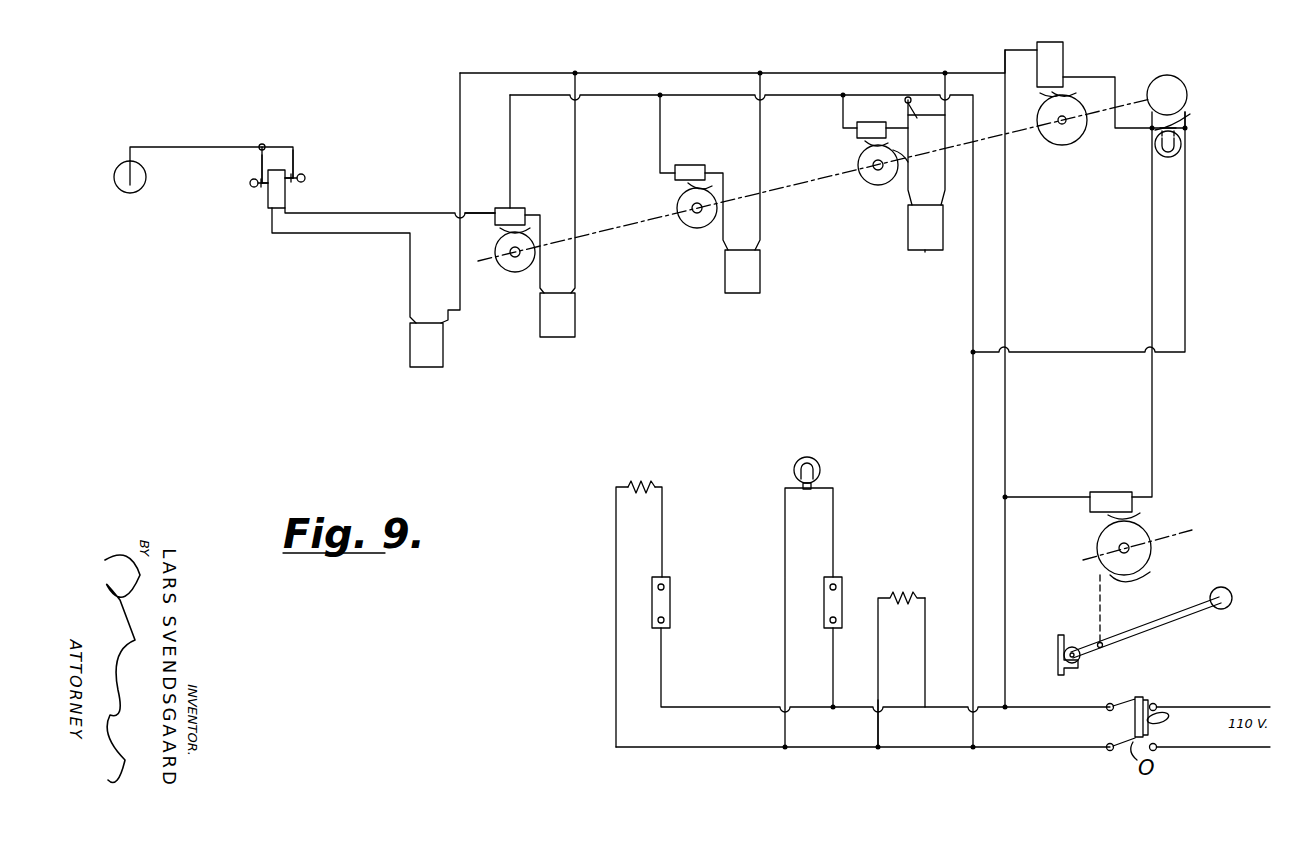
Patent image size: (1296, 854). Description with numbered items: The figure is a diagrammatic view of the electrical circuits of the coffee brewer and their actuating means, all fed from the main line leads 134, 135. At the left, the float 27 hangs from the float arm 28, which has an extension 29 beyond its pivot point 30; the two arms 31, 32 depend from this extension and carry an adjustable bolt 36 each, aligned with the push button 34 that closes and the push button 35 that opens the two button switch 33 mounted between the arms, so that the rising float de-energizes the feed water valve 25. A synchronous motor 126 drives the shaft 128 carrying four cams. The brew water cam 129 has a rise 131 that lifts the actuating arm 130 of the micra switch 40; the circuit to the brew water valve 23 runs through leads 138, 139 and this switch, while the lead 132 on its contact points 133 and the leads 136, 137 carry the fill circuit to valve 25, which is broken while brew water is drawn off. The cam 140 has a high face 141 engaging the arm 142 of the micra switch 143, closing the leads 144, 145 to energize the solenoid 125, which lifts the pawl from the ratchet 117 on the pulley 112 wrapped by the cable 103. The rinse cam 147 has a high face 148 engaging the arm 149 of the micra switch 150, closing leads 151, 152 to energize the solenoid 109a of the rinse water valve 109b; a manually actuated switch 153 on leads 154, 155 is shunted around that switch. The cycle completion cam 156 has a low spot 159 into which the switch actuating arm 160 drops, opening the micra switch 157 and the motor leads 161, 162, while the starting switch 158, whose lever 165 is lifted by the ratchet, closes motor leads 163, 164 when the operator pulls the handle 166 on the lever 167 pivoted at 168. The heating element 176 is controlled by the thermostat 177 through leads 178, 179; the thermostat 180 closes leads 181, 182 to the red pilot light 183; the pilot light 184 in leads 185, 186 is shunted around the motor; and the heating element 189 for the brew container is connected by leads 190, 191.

The solenoid controlled valve 23 is at (575, 318).
The solenoid-controlled valve 25 is at (418, 352).
The float 27 is at (131, 197).
The float arm 28 is at (187, 147).
The extension 29 is at (287, 147).
The pivot point 30 is at (264, 144).
The arm 31 is at (297, 155).
The arm 32 is at (260, 162).
The two button switch 33 is at (275, 197).
The push button 34 is at (263, 187).
The push button 35 is at (297, 185).
The adjustable bolt 36 is at (250, 181).
The micra switch 40 is at (515, 215).
The cable 103 is at (1102, 603).
The solenoid 109a is at (923, 230).
The rinse water valve 109b is at (927, 252).
The grooved pulley 112 is at (1133, 572).
The ratchet 117 is at (1157, 550).
The solenoid 125 is at (733, 278).
The synchronous motor 126 is at (1180, 83).
The shaft 128 is at (778, 190).
The cam 129 is at (498, 275).
The actuating arm 130 is at (538, 227).
The rise 131 is at (502, 238).
The lead 132 is at (435, 213).
The contact points 133 is at (497, 192).
The main line lead 134 is at (612, 98).
The main line lead 135 is at (617, 73).
The lead 136 is at (343, 238).
The lead 137 is at (460, 147).
The lead 138 is at (510, 147).
The lead 139 is at (575, 183).
The cam 140 is at (680, 200).
The high face 141 is at (713, 200).
The arm 142 is at (707, 187).
The micra switch 143 is at (692, 167).
The lead 144 is at (660, 130).
The lead 145 is at (760, 128).
The cam 147 is at (875, 168).
The high face 148 is at (903, 155).
The arm 149 is at (863, 145).
The micra switch 150 is at (875, 130).
The lead 151 is at (843, 105).
The lead 152 is at (945, 162).
The manually actuated switch 153 is at (948, 115).
The lead 154 is at (905, 97).
The lead 155 is at (910, 122).
The cycle completion cam 156 is at (1077, 135).
The micra switch 157 is at (1057, 53).
The starting switch 158 is at (1115, 468).
The low spot 159 is at (1053, 97).
The switch actuating arm 160 is at (1068, 92).
The motor lead 161 is at (1017, 48).
The motor lead 162 is at (1090, 77).
The motor lead 163 is at (1033, 502).
The motor lead 164 is at (1170, 392).
The lever 165 is at (1137, 515).
The handle 166 is at (1222, 610).
The lever 167 is at (1150, 630).
The pivot 168 is at (1078, 648).
The electrical immersion heating element 176 is at (638, 478).
The thermostat 177 is at (665, 602).
The lead 178 is at (661, 665).
The lead 179 is at (616, 658).
The thermostat 180 is at (835, 603).
The lead 181 is at (833, 660).
The lead 182 is at (785, 628).
The pilot light 183 is at (820, 463).
The pilot light 184 is at (1182, 145).
The lead 185 is at (1185, 122).
The lead 186 is at (1194, 131).
The electric heating element 189 is at (907, 597).
The lead 190 is at (925, 660).
The lead 191 is at (878, 682).